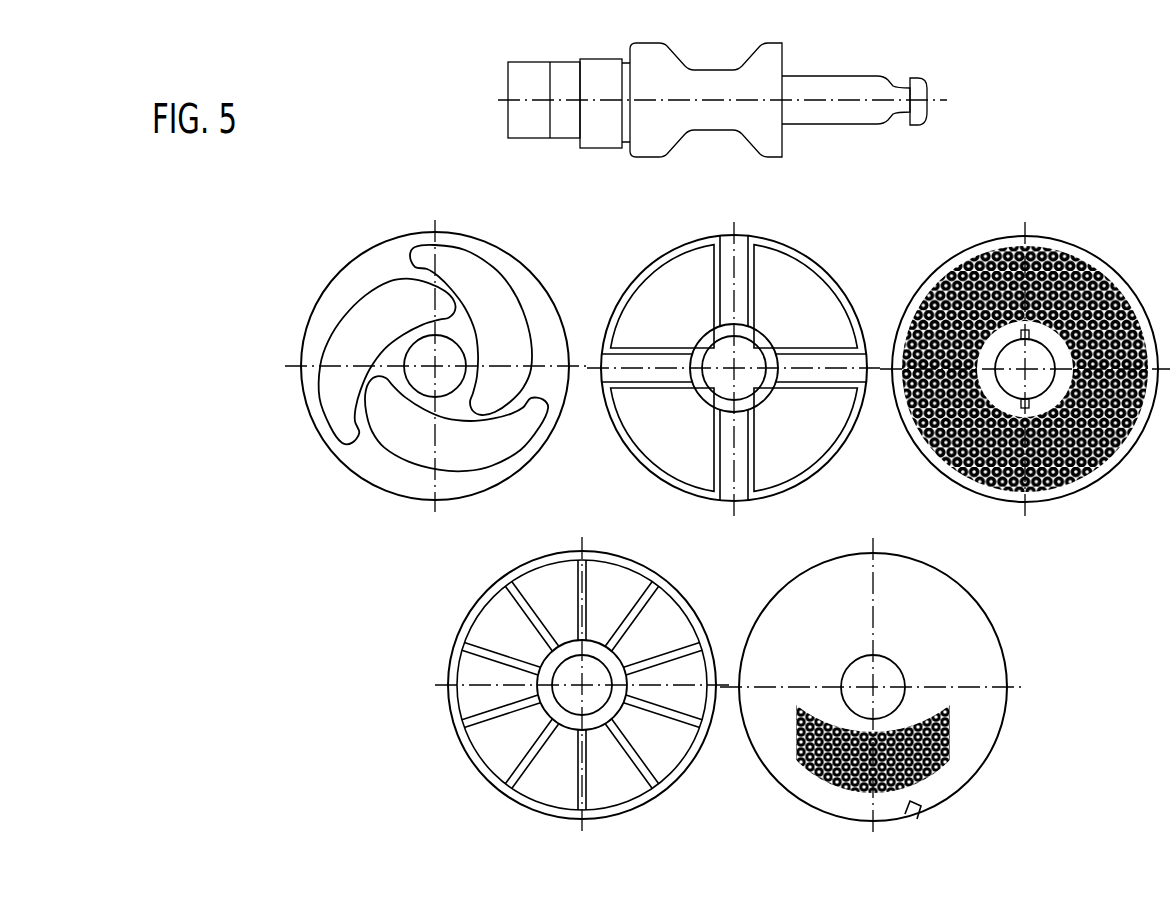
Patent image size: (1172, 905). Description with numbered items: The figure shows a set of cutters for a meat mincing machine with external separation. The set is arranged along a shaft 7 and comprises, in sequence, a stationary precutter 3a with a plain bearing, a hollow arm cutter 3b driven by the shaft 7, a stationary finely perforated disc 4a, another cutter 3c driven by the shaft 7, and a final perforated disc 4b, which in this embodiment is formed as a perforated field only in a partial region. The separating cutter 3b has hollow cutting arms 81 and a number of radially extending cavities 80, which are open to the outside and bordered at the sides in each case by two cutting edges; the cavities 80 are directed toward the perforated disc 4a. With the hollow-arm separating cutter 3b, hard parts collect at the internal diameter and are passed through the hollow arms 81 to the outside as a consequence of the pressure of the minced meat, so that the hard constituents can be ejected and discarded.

The shaft 7 is at (863, 78).
The precutter 3a is at (358, 473).
The hollow arm cutter 3b is at (657, 475).
The cutter 3c is at (508, 793).
The finely perforated disc 4a is at (950, 478).
The perforated disc 4b is at (797, 793).
The radially extending cavity 80 is at (736, 244).
The hollow cutting arm 81 is at (716, 281).